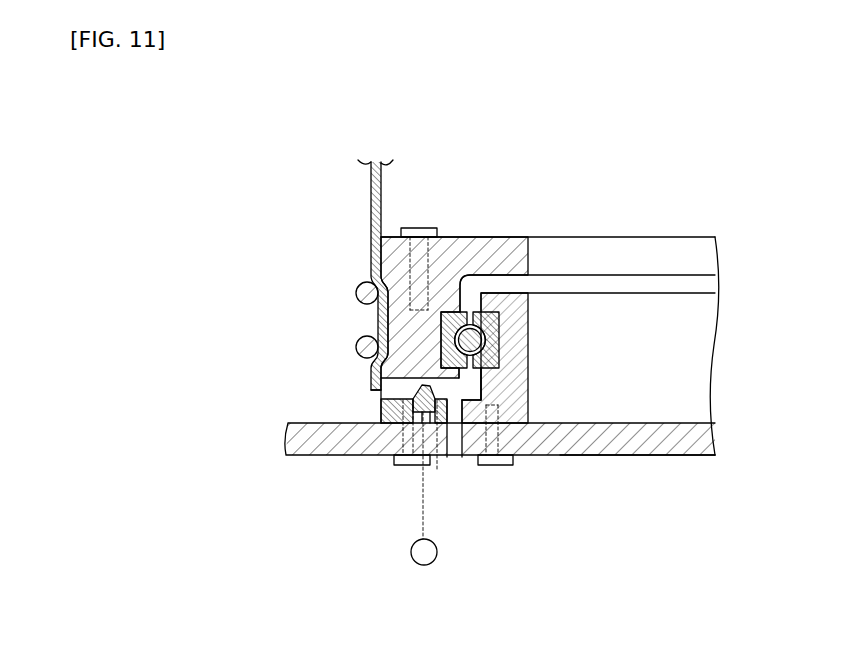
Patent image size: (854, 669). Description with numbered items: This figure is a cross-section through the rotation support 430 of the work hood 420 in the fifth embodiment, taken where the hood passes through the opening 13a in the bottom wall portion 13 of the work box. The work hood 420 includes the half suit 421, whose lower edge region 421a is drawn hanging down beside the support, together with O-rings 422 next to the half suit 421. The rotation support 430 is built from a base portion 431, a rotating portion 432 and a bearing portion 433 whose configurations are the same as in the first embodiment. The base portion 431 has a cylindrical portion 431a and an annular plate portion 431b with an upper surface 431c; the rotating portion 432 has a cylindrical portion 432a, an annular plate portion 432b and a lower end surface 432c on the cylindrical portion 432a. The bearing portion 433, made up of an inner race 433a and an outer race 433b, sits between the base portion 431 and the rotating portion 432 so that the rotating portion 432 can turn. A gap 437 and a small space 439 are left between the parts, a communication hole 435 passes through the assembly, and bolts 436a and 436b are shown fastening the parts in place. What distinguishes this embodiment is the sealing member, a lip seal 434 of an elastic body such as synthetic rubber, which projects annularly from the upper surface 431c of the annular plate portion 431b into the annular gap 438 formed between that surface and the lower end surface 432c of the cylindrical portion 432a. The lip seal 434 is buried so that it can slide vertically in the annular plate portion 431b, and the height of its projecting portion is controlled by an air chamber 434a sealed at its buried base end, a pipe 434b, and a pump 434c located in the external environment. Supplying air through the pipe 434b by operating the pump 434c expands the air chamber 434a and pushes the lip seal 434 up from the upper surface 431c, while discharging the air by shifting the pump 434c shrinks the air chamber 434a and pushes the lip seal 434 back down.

The bottom wall portion 13 is at (306, 423).
The opening 13a is at (613, 481).
The work hood 420 is at (301, 235).
The half suit 421 is at (371, 217).
The lower end of movable plate 421a is at (372, 384).
The O-ring 422 is at (357, 345).
The rotation support 430 is at (502, 157).
The rotating portion 432 is at (485, 302).
The cylindrical portion 432a is at (398, 316).
The annular plate portion 432b is at (485, 252).
The lower end surface 432c is at (485, 377).
The bearing portion 433 is at (533, 339).
The inner race 433a is at (468, 316).
The outer race 433b is at (497, 352).
The base portion 431 is at (466, 423).
The cylindrical portion 431a is at (486, 340).
The annular plate portion 431b is at (408, 396).
The upper surface 431c is at (392, 412).
The sealing member (lip seal) 434 is at (416, 396).
The air chamber 434a is at (443, 462).
The pipe 434b is at (437, 473).
The pump 434c is at (434, 563).
The communication hole 435 is at (458, 468).
The lower fastening bolts 436a is at (410, 466).
The upper fastening bolt 436b is at (437, 217).
The gap 437 is at (526, 287).
The annular gap 438 is at (371, 401).
The small space 439 is at (445, 387).